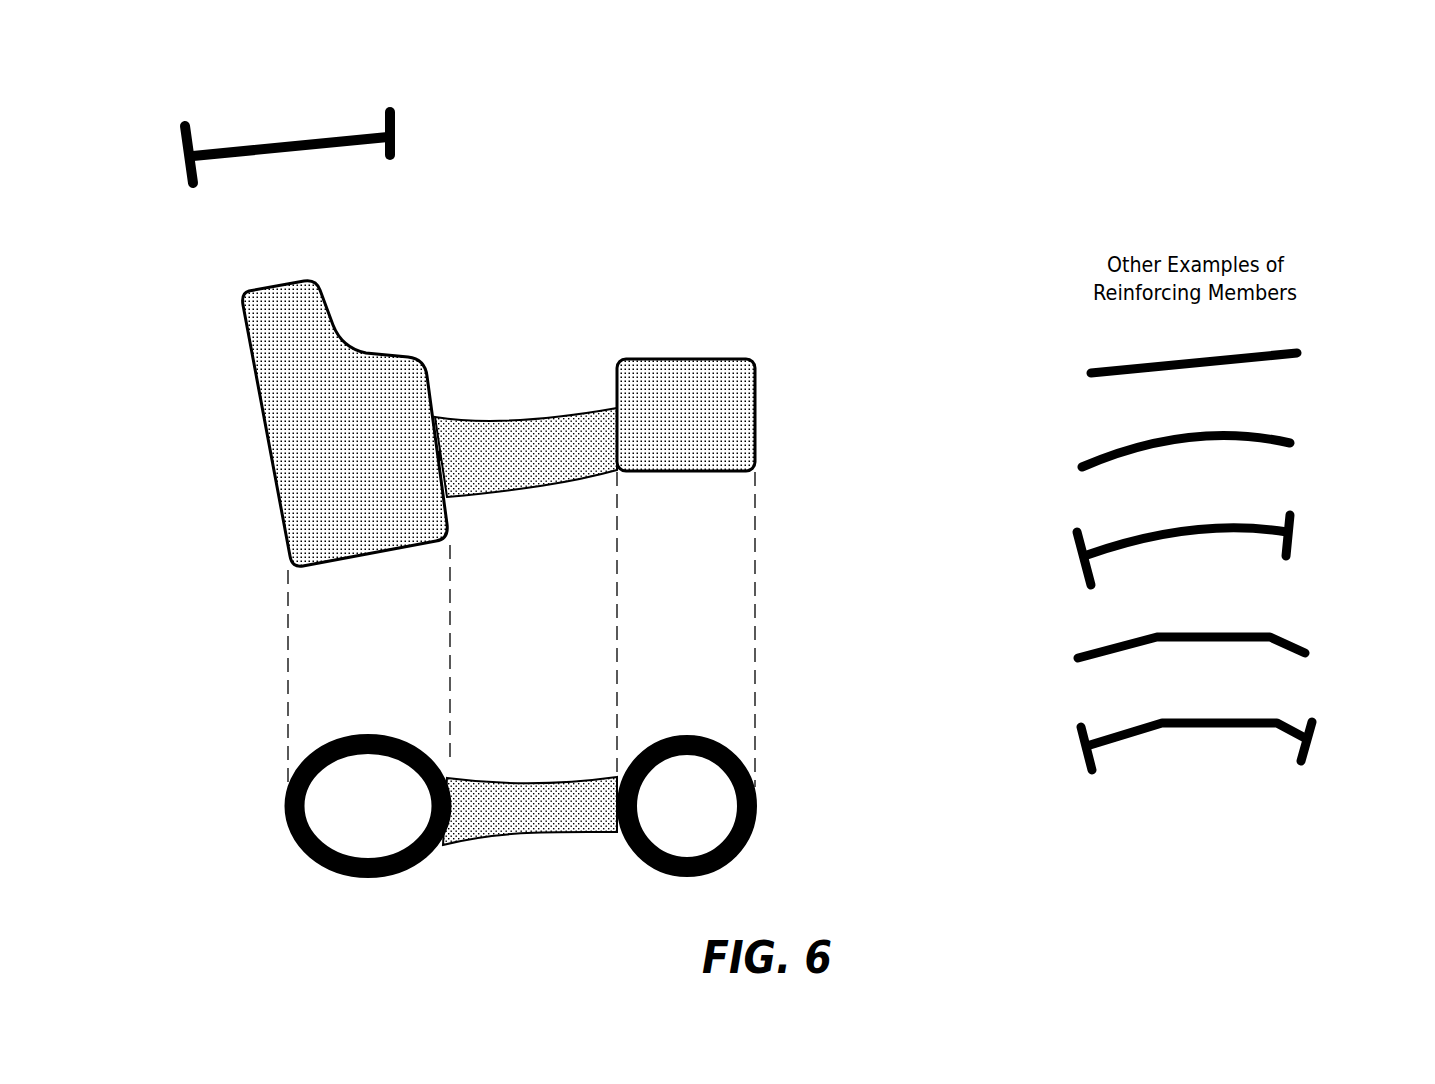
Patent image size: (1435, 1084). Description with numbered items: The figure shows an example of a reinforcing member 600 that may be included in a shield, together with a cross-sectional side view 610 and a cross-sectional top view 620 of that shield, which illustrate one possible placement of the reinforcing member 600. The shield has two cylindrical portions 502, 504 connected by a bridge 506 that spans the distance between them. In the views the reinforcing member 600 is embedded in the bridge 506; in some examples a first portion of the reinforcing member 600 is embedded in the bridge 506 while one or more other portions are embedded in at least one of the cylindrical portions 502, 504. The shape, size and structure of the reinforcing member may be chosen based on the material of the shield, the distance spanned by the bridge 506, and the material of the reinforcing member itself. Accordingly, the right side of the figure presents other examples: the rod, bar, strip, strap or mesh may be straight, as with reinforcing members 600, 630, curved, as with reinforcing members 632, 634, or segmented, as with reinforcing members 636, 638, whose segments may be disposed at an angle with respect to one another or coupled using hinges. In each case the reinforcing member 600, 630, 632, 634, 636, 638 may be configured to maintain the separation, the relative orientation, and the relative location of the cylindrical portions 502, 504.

The reinforcing member 600 is at (120, 86).
The cross-sectional side view 610 is at (447, 503).
The cross-sectional top view 620 is at (132, 695).
The cylindrical portion 502 is at (277, 314).
The cylindrical portion 504 is at (736, 389).
The bridge 506 is at (557, 427).
The reinforcing member 630 is at (1306, 328).
The reinforcing member 632 is at (1306, 427).
The reinforcing member 634 is at (1326, 518).
The reinforcing member 636 is at (1323, 625).
The reinforcing member 638 is at (1348, 734).